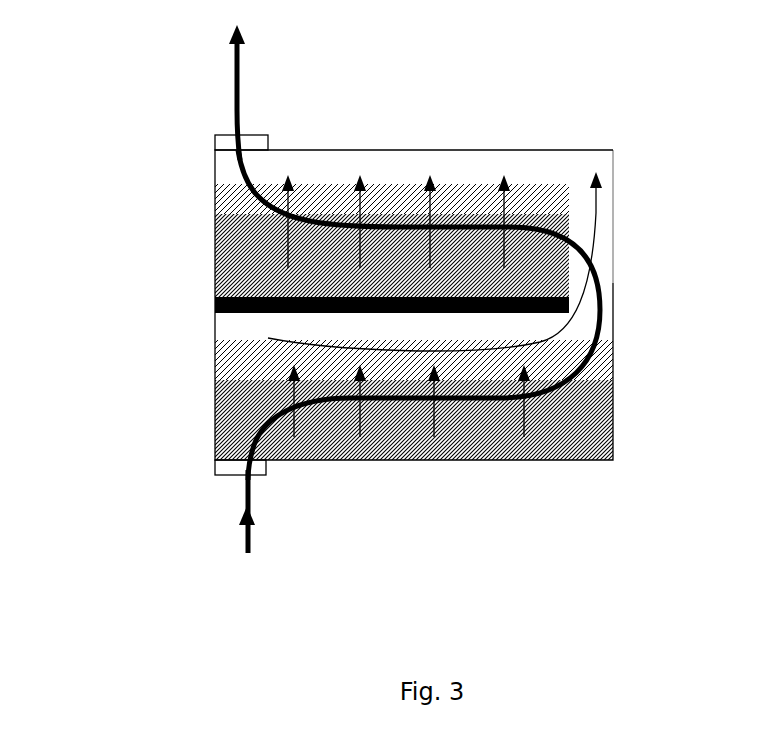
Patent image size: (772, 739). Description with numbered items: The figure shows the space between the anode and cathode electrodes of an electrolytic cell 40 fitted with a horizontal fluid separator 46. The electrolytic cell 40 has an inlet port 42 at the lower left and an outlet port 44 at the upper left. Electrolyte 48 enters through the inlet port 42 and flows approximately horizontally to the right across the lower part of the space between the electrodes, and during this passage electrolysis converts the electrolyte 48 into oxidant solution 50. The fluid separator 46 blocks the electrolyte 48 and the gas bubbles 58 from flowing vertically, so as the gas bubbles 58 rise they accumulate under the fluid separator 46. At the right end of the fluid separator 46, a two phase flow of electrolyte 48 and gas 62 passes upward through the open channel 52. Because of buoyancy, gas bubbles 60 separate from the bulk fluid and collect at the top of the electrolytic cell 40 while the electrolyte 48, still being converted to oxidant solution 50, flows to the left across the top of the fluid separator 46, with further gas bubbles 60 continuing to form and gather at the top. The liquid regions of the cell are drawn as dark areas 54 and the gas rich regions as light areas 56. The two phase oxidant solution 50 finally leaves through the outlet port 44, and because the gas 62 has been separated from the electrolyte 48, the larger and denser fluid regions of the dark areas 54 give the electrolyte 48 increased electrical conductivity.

The electrolytic cell 40 is at (613, 440).
The inlet port 42 is at (215, 472).
The outlet port 44 is at (232, 141).
The fluid separator 46 is at (215, 312).
The electrolyte 48 is at (243, 533).
The oxidant solution 50 is at (237, 52).
The open channel 52 is at (590, 307).
The dark areas 54 is at (472, 263).
The light areas 56 is at (505, 333).
The gas bubbles 58 is at (294, 388).
The gas bubbles 60 is at (288, 238).
The gas 62 is at (595, 213).